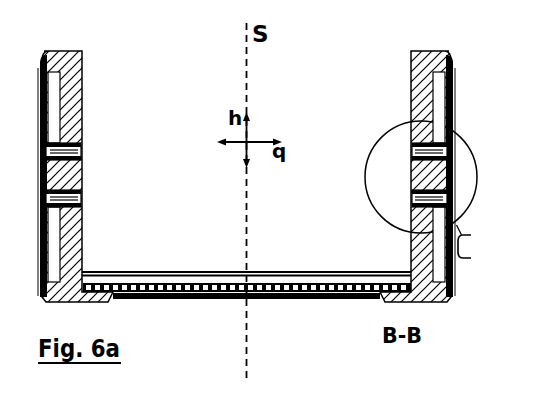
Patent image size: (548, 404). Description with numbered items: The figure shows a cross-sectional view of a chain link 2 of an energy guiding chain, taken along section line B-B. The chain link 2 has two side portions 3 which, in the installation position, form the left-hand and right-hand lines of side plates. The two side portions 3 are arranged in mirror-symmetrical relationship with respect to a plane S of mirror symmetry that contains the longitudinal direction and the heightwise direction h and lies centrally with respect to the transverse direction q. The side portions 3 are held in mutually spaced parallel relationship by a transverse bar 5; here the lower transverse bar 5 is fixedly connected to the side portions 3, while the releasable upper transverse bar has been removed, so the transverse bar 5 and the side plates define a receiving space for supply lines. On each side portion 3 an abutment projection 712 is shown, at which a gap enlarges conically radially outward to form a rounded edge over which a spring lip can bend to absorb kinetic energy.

The chain link 2 is at (315, 68).
The side portion 3 is at (68, 51).
The transverse bar 5 is at (317, 300).
The abutment projection 712 is at (80, 177).